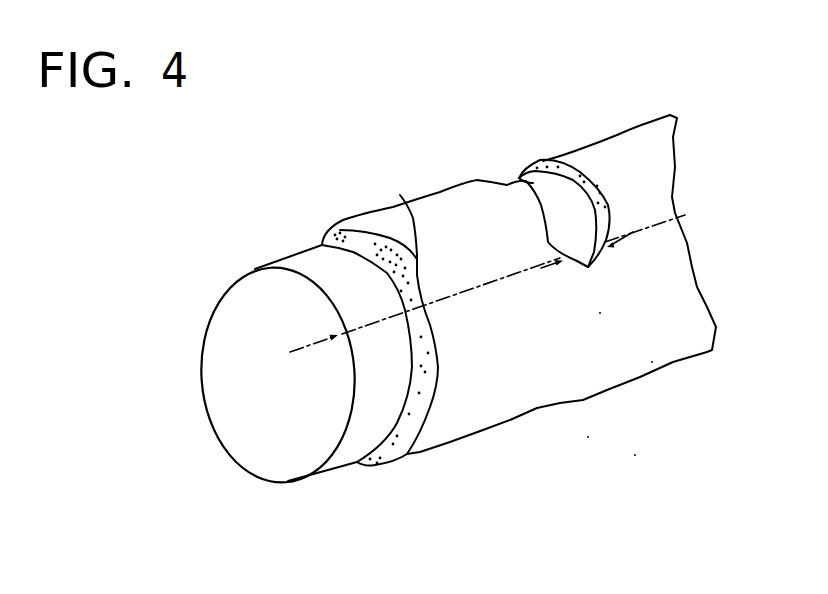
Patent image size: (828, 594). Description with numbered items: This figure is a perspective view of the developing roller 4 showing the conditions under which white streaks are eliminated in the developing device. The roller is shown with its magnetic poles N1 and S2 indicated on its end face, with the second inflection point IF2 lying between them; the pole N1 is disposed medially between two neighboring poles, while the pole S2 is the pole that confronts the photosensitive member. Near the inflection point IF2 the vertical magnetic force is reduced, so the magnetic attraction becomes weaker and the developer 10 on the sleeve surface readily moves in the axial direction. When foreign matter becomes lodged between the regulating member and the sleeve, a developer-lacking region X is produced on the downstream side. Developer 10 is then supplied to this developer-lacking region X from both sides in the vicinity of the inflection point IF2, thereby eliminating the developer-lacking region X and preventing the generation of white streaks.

The developing roller 4 is at (246, 264).
The developer 10 is at (400, 195).
The developer-lacking region X is at (517, 181).
The magnetic pole N1 is at (314, 313).
The magnetic pole S2 is at (329, 388).
The second inflection point IF2 is at (465, 293).